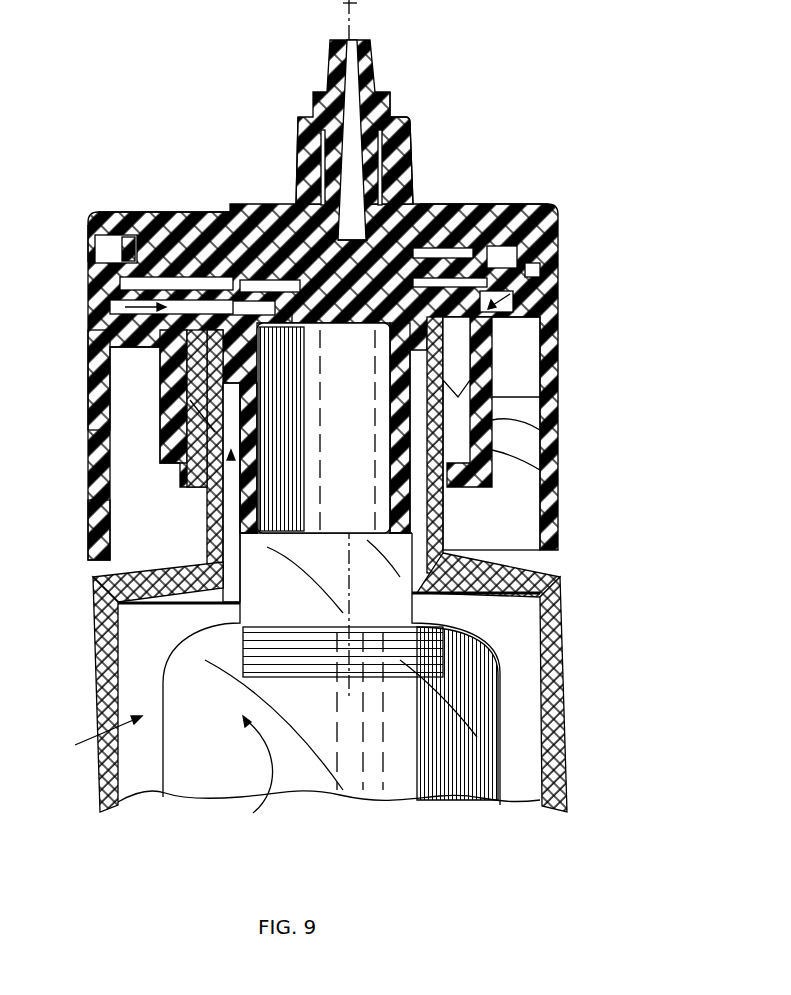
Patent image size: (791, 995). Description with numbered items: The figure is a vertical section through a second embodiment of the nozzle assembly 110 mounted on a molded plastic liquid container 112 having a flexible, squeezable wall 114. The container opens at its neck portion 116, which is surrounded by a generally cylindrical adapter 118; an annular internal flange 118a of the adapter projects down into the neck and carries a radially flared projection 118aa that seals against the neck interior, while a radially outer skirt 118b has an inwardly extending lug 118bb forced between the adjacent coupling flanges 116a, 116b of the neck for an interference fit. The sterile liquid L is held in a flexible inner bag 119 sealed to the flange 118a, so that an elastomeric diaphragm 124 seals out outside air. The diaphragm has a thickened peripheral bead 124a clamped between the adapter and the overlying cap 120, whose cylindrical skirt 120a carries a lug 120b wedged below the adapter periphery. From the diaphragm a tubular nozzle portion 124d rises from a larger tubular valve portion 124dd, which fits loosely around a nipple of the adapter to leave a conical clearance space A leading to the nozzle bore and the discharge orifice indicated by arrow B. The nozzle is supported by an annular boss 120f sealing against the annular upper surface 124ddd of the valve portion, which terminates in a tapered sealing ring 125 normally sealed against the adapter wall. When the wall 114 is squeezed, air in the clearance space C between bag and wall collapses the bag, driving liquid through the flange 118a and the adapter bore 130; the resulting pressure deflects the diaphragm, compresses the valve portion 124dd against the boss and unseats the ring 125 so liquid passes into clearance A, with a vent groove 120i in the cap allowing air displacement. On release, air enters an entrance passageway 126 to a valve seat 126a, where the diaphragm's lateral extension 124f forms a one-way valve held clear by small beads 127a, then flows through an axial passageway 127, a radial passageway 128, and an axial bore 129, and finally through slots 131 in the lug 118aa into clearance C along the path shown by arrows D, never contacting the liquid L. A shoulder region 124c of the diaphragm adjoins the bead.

The nozzle assembly 110 is at (424, 74).
The liquid container 112 is at (580, 646).
The flexible wall 114 is at (562, 735).
The neck portion 116 is at (450, 505).
The coupling flange 116a is at (522, 398).
The coupling flange 116b is at (495, 425).
The adapter 118 is at (545, 291).
The annular internal flange 118a is at (403, 378).
The radially flared annular projection 118aa is at (408, 437).
The radially outer cylindrical skirt 118b is at (496, 462).
The annular lug 118bb is at (497, 468).
The flexible inner bag 119 is at (487, 745).
The cap 120 is at (423, 192).
The cylindrical skirt 120a is at (93, 530).
The inwardly projecting lug 120b is at (95, 365).
The annular boss 120f is at (400, 137).
The vent groove 120i is at (545, 247).
The elastomeric diaphragm 124 is at (480, 243).
The annular peripheral bead 124a is at (186, 213).
The valve shoulder 124c is at (207, 210).
The tubular nozzle portion 124d is at (333, 90).
The tubular valve portion 124dd is at (300, 200).
The annular upper surface 124ddd is at (298, 180).
The lateral extension portion 124f is at (112, 268).
The tapered sealing ring 125 is at (270, 227).
The entrance passageway 126 is at (110, 220).
The valve seat 126a is at (92, 230).
The axially aligned passageway 127 is at (115, 307).
The small beads 127a is at (118, 283).
The radially aligned passageway 128 is at (113, 338).
The axial bore 129 is at (173, 333).
The adapter passageway bore 130 is at (296, 300).
The slots 131 is at (200, 400).
The clearance space A is at (342, 302).
The liquid discharge orifice direction B is at (352, 22).
The air clearance space C is at (97, 740).
The air flow path arrows D is at (234, 420).
The sterile liquid L is at (253, 772).